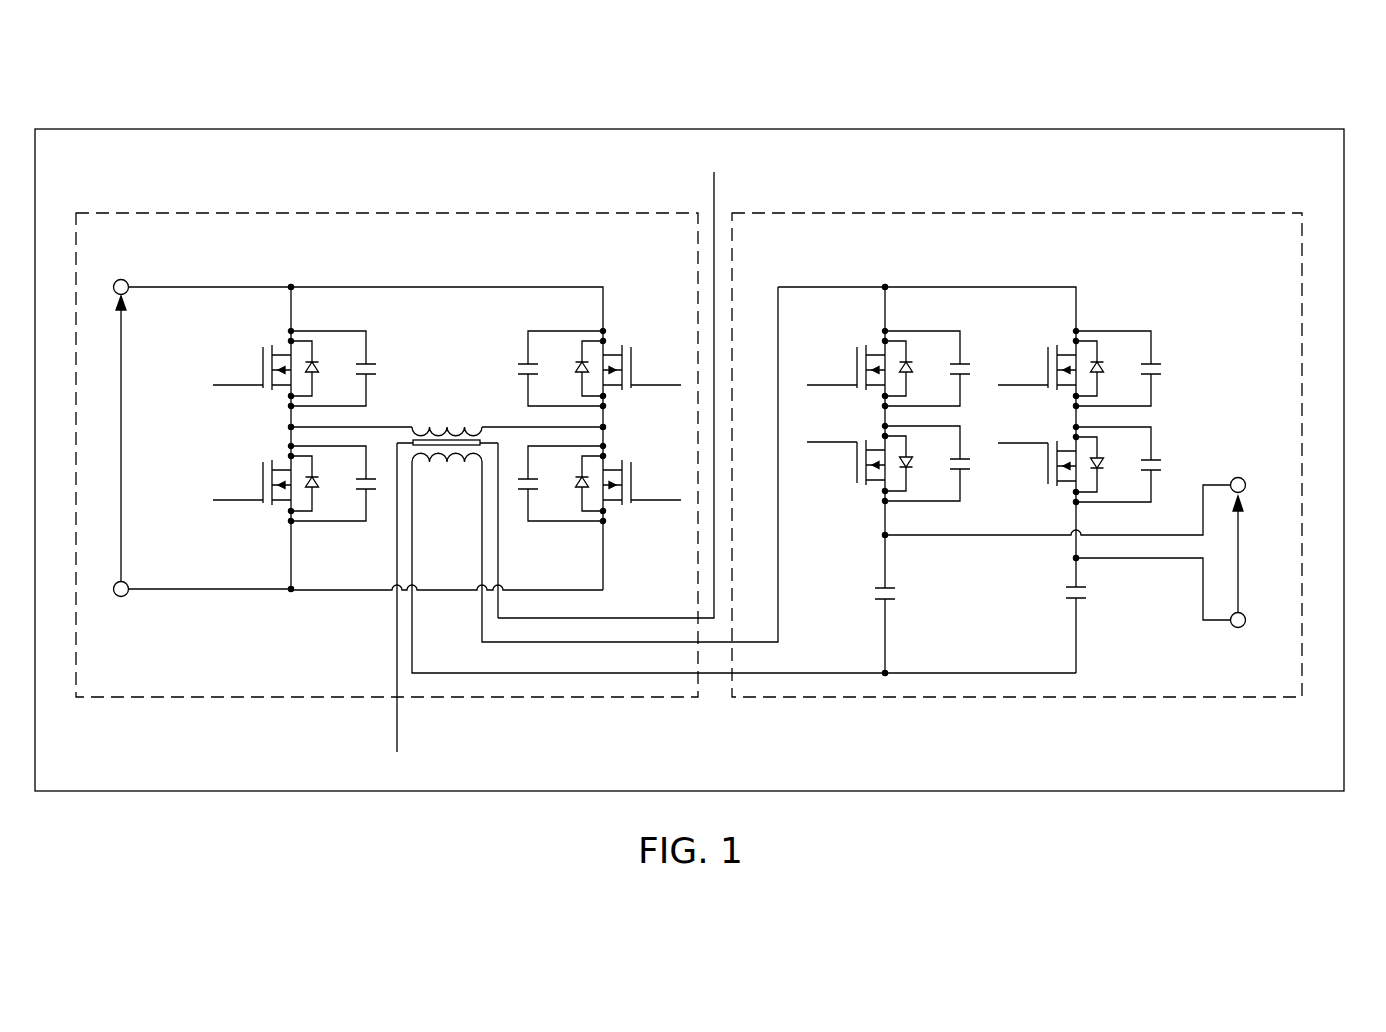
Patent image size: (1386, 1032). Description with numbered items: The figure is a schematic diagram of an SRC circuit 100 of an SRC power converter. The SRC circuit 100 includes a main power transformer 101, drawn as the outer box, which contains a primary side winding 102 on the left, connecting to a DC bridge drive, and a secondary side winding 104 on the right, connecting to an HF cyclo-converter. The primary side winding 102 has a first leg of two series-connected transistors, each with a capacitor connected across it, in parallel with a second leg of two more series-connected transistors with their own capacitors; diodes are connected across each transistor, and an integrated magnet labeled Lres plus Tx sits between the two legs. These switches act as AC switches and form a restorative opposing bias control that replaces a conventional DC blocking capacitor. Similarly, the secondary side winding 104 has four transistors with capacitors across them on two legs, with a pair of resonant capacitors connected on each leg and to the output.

The SRC circuit 100 is at (1305, 78).
The main power transformer 101 is at (99, 170).
The primary side winding 102 is at (139, 253).
The secondary side winding 104 is at (1194, 253).